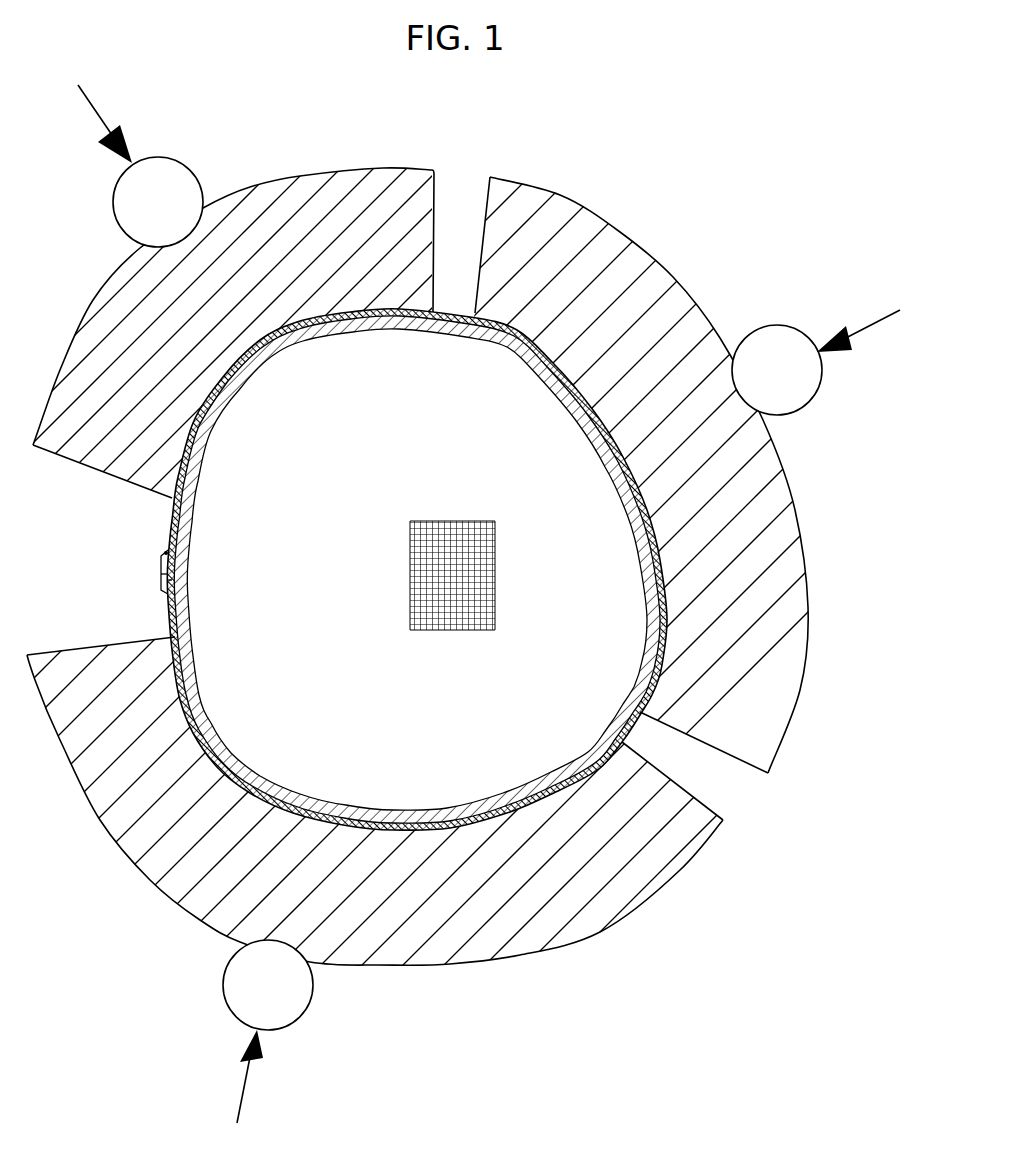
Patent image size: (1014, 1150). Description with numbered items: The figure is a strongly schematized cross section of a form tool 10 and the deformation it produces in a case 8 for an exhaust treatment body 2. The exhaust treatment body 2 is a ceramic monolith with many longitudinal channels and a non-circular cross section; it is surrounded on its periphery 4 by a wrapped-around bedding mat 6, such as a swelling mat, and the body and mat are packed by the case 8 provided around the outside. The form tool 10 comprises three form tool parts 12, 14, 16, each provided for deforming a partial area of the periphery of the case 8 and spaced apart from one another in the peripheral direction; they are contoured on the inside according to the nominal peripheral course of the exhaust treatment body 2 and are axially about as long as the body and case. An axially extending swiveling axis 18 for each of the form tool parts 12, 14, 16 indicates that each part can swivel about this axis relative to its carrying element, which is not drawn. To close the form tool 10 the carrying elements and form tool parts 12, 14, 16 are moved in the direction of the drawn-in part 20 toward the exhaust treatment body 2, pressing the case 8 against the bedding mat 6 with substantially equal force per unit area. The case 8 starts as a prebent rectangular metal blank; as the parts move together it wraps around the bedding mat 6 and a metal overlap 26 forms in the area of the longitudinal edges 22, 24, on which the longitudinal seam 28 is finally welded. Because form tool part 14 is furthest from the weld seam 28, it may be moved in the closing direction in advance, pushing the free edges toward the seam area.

The exhaust treatment body 2 is at (382, 482).
The periphery 4 is at (527, 353).
The bedding mat 6 is at (597, 443).
The case 8 is at (632, 722).
The form tool 10 is at (660, 178).
The form tool part 12 is at (328, 194).
The form tool part 14 is at (656, 294).
The form tool part 16 is at (494, 940).
The swiveling axis 18 is at (168, 172).
The drawn-in part 20 is at (92, 97).
The longitudinal edge 22 is at (163, 562).
The longitudinal edge 24 is at (172, 580).
The metal overlap 26 is at (154, 575).
The longitudinal seam 28 is at (165, 553).